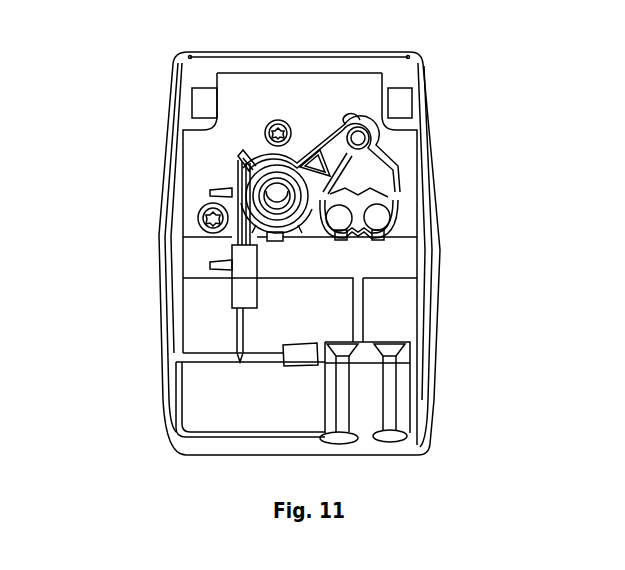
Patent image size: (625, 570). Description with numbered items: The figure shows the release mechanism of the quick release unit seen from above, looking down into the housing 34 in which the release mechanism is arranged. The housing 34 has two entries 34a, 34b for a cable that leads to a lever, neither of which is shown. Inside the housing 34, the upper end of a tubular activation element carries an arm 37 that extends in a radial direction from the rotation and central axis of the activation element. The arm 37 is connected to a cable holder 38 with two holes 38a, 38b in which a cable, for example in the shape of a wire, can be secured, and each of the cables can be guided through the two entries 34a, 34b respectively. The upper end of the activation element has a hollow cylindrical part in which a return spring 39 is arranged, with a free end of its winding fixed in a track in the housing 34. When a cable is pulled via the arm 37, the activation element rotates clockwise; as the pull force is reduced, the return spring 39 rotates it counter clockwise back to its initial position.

The housing 34 is at (110, 226).
The first entry 34a is at (340, 390).
The second entry 34b is at (390, 378).
The arm 37 is at (335, 140).
The cable holder 38 is at (440, 199).
The first hole 38a is at (340, 220).
The second hole 38b is at (392, 216).
The return spring 39 is at (253, 197).